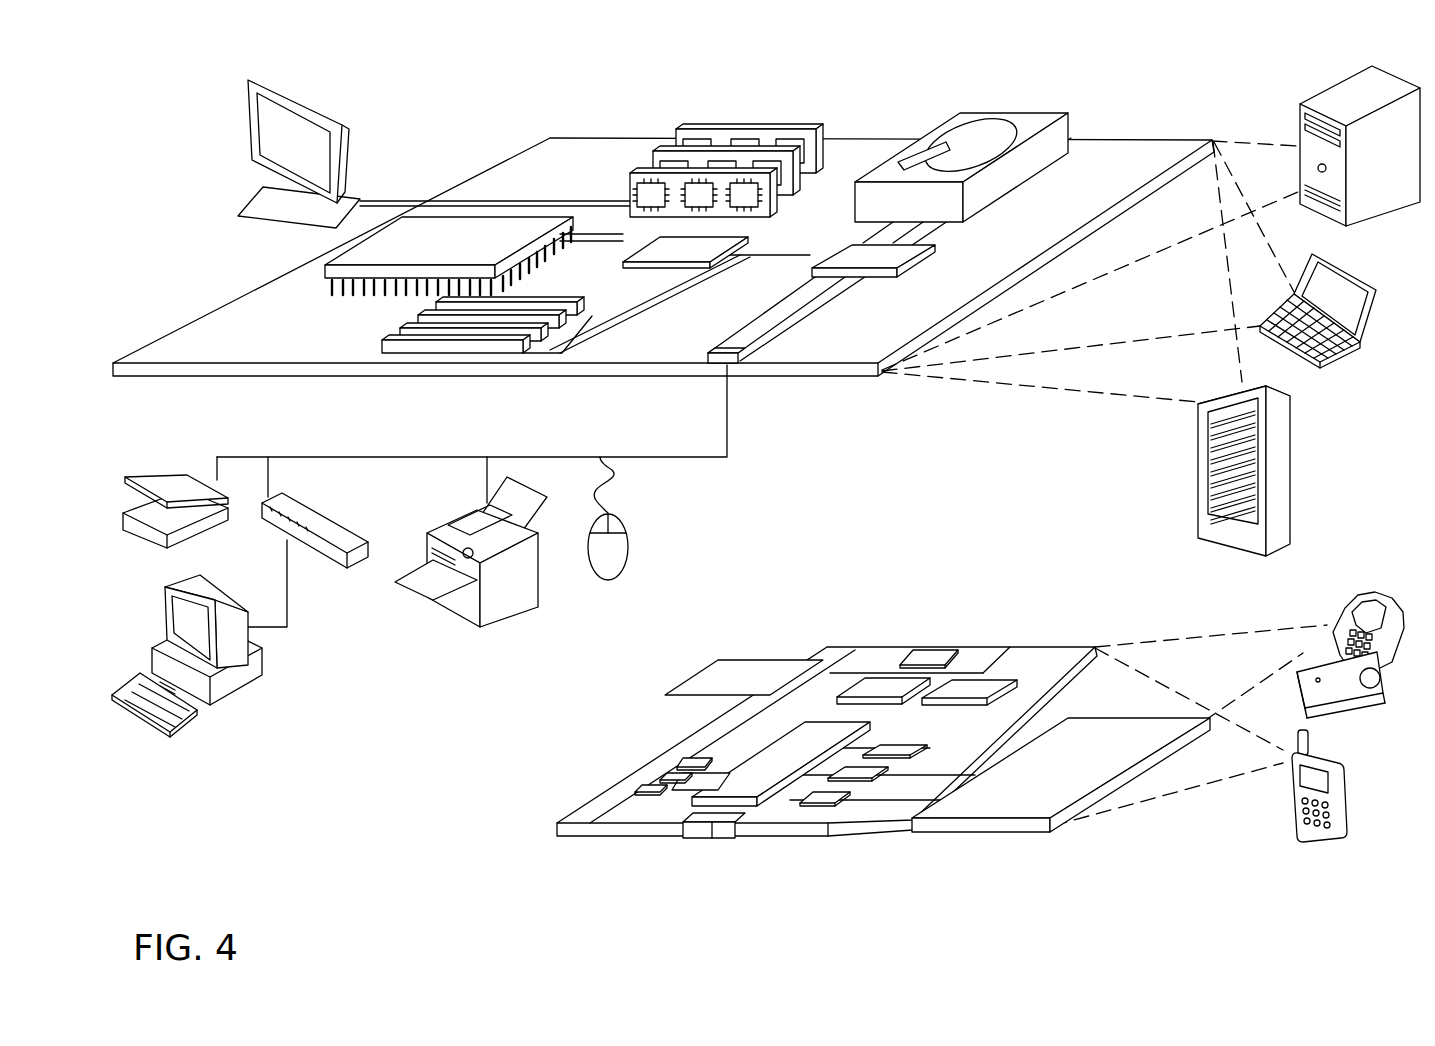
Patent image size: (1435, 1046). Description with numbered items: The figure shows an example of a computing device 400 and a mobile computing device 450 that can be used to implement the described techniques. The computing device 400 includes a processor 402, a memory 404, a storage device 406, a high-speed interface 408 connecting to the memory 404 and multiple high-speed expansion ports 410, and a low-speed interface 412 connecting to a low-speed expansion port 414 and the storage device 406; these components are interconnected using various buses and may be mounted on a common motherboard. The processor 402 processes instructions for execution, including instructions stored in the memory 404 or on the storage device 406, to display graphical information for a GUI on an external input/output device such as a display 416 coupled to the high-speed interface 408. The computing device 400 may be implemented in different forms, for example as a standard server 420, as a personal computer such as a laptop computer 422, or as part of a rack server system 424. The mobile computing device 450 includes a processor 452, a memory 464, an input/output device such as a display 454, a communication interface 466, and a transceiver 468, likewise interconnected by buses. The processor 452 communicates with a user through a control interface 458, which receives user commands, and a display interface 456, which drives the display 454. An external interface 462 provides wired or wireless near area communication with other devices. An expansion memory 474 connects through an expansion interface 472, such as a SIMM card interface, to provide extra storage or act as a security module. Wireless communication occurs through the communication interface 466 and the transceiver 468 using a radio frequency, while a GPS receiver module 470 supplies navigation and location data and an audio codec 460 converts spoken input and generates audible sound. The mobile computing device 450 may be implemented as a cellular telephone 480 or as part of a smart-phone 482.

The computing device 400 is at (467, 104).
The processor 402 is at (325, 270).
The memory 404 is at (693, 128).
The storage device 406 is at (955, 128).
The high-speed interface 408 is at (658, 250).
The high-speed expansion ports 410 is at (412, 331).
The low-speed interface 412 is at (855, 252).
The low-speed expansion port 414 is at (725, 362).
The display 416 is at (249, 81).
The standard server 420 is at (1300, 118).
The laptop computer 422 is at (1368, 285).
The rack server system 424 is at (1200, 504).
The mobile computing device 450 is at (532, 834).
The processor 452 is at (750, 787).
The display 454 is at (1013, 811).
The display interface 456 is at (822, 797).
The control interface 458 is at (865, 770).
The audio codec 460 is at (893, 752).
The external interface 462 is at (712, 828).
The memory 464 is at (662, 782).
The communication interface 466 is at (884, 687).
The transceiver 468 is at (970, 688).
The GPS receiver module 470 is at (934, 650).
The expansion interface 472 is at (808, 656).
The expansion memory 474 is at (745, 668).
The cellular telephone 480 is at (1337, 637).
The smart-phone 482 is at (1290, 762).